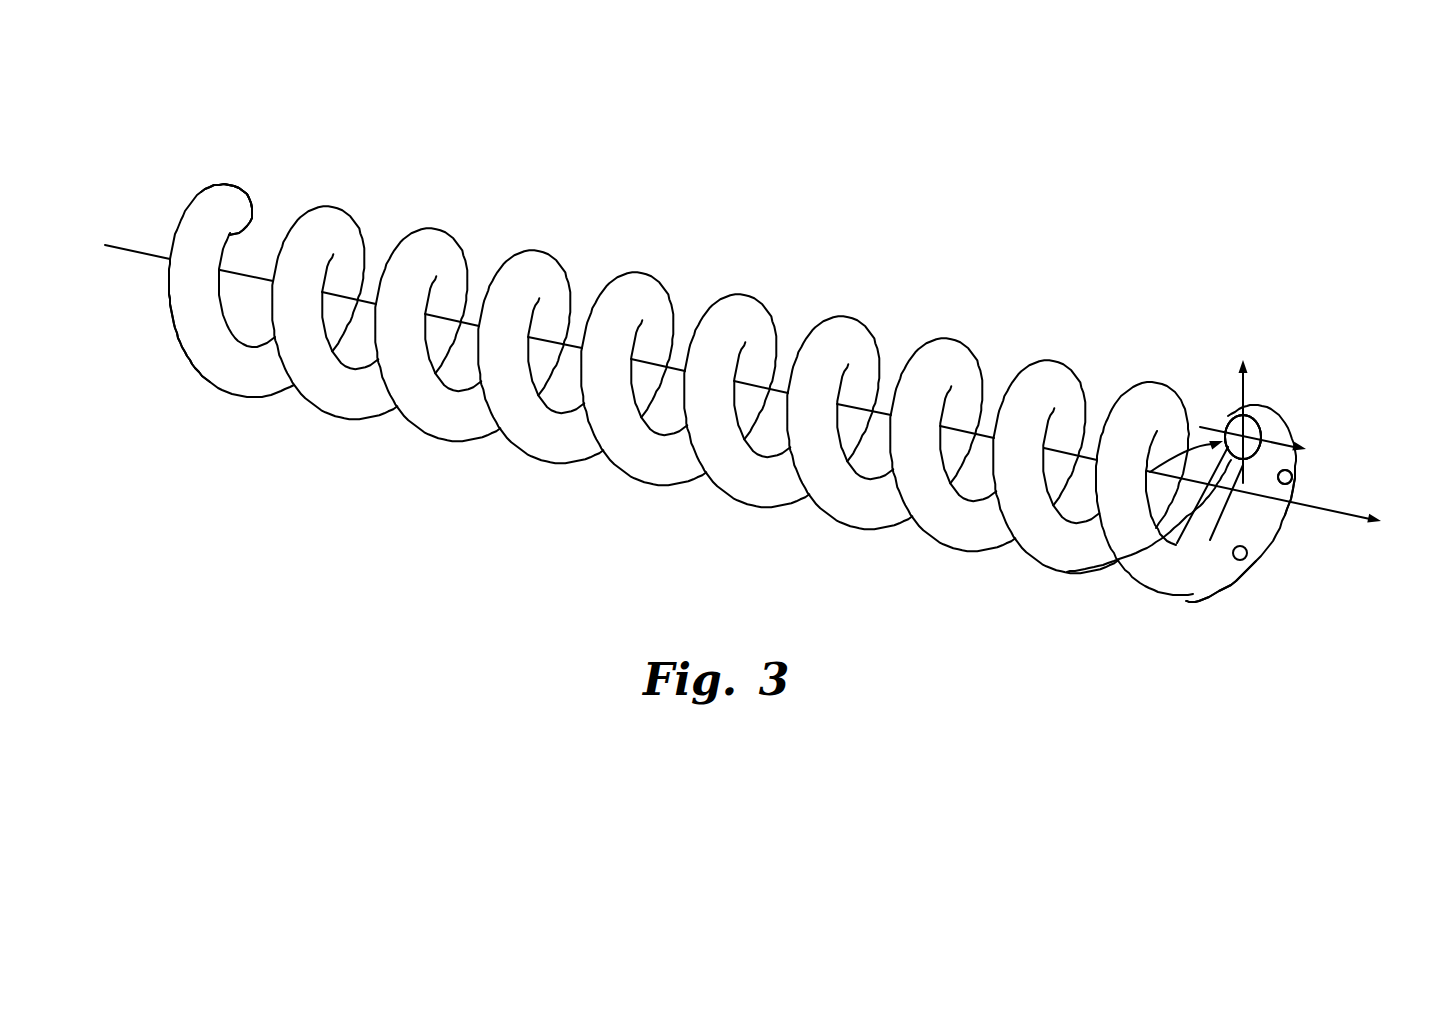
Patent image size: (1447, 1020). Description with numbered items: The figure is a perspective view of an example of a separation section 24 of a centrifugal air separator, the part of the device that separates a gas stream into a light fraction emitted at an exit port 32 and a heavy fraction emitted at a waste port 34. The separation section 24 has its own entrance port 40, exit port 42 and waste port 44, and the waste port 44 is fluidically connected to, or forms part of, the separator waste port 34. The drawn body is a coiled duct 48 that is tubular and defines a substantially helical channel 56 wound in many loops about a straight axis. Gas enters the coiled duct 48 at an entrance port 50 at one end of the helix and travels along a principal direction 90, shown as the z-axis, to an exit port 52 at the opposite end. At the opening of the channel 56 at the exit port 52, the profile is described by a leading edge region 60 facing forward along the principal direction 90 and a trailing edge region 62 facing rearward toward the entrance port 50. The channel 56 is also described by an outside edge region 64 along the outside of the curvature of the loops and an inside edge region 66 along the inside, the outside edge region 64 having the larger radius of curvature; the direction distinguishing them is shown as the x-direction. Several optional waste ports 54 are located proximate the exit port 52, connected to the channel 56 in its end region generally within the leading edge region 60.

The separation section 24 is at (671, 314).
The exit port 32 is at (1072, 572).
The waste port 34 is at (1320, 472).
The entrance port 40 is at (226, 182).
The exit port 42 is at (1147, 580).
The waste port 44 is at (1293, 482).
The coiled duct 48 is at (201, 374).
The entrance port 50 is at (220, 183).
The exit port 52 is at (1221, 584).
The waste port 54 is at (1293, 477).
The helical channel 56 is at (252, 182).
The leading edge region 60 is at (1262, 437).
The trailing edge region 62 is at (1229, 423).
The outside edge region 64 is at (1247, 409).
The inside edge region 66 is at (1285, 487).
The principal direction 90 is at (1332, 511).